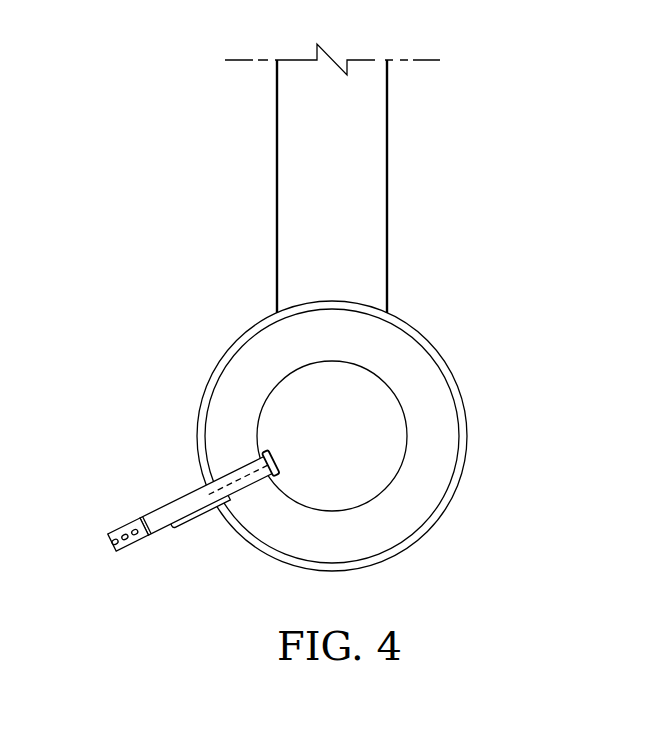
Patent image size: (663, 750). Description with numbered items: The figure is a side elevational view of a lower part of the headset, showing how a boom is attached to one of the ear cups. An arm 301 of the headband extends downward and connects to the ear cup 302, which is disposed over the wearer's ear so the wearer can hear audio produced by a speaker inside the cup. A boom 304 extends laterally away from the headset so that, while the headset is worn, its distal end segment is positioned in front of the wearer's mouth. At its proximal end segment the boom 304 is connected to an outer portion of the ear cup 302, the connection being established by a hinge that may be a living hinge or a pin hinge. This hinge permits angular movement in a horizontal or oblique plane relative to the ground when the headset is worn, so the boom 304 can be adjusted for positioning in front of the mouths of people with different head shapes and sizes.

The arms 301 is at (276, 125).
The ear cups 302 is at (467, 433).
The boom 304 is at (161, 503).